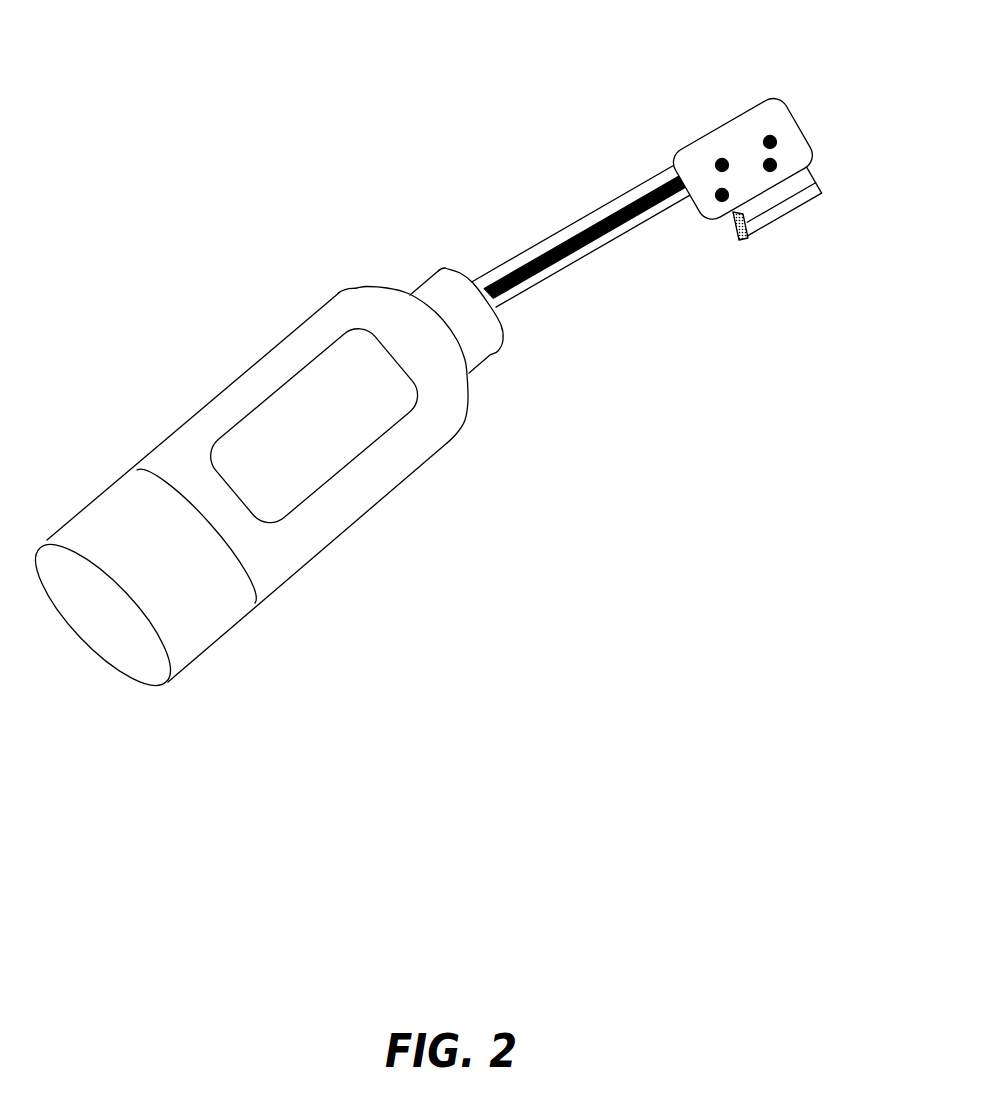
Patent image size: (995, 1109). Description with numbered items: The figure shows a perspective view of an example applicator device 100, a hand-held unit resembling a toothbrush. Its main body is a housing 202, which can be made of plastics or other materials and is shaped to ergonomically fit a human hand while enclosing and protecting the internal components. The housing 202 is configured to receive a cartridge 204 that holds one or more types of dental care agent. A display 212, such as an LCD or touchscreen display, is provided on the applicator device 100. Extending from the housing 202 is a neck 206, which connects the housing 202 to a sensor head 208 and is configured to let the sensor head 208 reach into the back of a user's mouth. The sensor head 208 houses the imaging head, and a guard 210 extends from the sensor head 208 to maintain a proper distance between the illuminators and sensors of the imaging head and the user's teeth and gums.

The applicator device 100 is at (302, 111).
The housing 202 is at (254, 365).
The cartridge 204 is at (99, 519).
The neck 206 is at (532, 247).
The sensor head 208 is at (740, 115).
The guard 210 is at (792, 211).
The display 212 is at (343, 476).